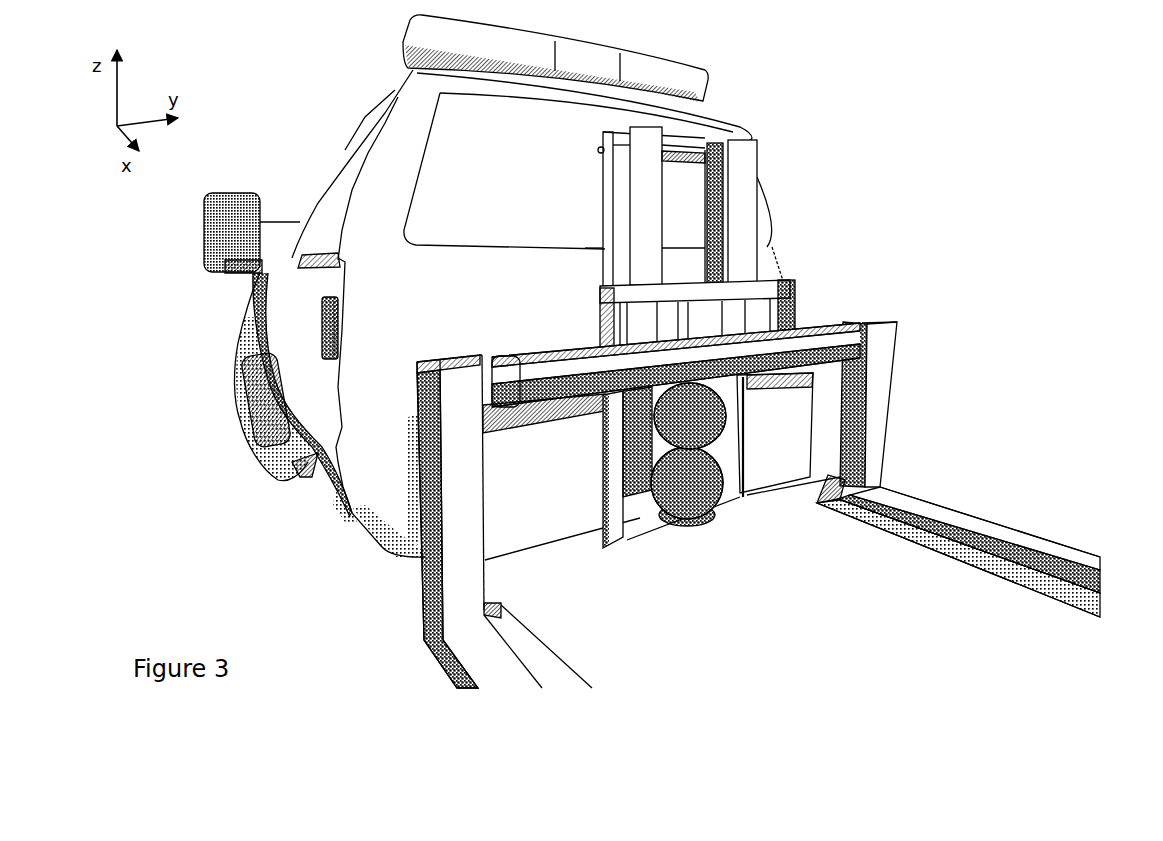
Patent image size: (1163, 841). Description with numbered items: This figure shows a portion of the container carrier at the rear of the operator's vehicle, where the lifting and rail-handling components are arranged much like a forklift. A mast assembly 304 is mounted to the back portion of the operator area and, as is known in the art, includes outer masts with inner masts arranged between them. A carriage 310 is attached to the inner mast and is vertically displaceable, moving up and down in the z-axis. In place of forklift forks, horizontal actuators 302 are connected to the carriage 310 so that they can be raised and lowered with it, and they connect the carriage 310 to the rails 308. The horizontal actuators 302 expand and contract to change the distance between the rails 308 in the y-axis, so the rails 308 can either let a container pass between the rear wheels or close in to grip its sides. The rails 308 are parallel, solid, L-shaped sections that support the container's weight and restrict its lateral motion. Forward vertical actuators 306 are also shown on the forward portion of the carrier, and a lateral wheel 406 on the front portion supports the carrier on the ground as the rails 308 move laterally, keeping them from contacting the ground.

The horizontal actuators 302 is at (832, 325).
The mast assembly 304 is at (752, 172).
The forward vertical actuators 306 is at (724, 425).
The rails 308 is at (990, 520).
The carriage 310 is at (783, 288).
The lateral wheels 406 is at (501, 603).